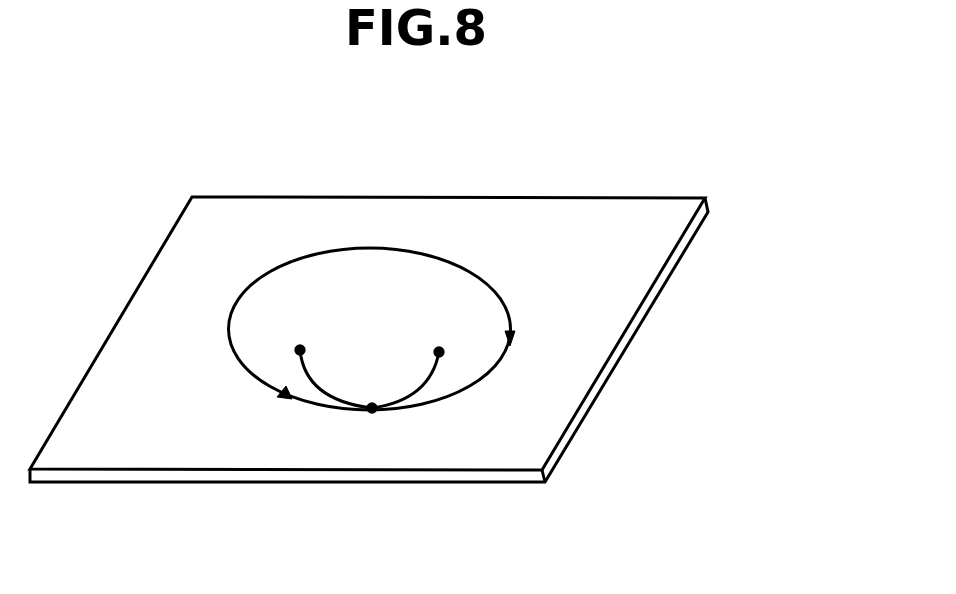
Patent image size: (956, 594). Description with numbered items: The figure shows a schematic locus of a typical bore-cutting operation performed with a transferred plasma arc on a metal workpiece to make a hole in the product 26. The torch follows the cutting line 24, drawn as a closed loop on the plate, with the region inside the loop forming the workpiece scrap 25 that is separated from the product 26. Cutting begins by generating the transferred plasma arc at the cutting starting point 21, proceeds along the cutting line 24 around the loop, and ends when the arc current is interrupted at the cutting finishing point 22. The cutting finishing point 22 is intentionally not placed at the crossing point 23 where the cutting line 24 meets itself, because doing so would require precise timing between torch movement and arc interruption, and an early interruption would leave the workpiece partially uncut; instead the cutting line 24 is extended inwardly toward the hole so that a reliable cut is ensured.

The cutting starting point 21 is at (442, 352).
The cutting finishing point 22 is at (300, 350).
The crossing point 23 is at (372, 408).
The cutting line 24 is at (472, 385).
The workpiece scrap 25 is at (255, 312).
The product 26 is at (573, 243).